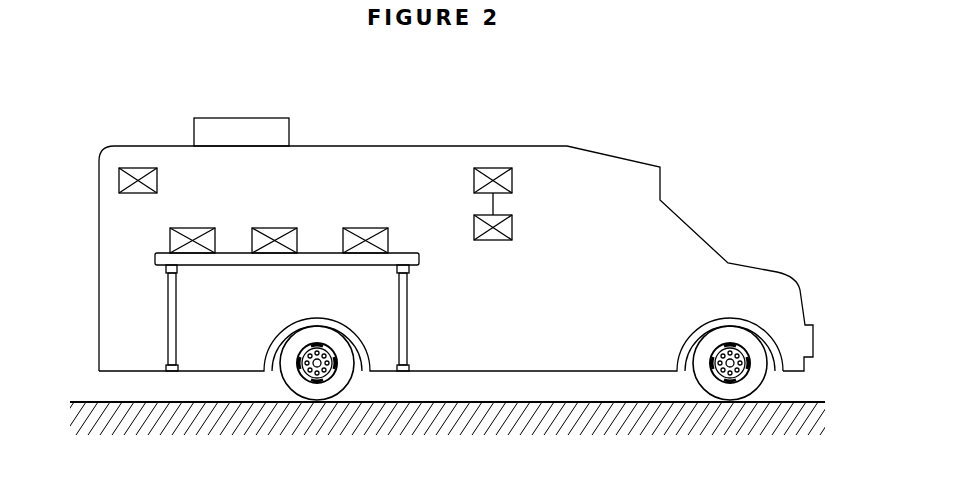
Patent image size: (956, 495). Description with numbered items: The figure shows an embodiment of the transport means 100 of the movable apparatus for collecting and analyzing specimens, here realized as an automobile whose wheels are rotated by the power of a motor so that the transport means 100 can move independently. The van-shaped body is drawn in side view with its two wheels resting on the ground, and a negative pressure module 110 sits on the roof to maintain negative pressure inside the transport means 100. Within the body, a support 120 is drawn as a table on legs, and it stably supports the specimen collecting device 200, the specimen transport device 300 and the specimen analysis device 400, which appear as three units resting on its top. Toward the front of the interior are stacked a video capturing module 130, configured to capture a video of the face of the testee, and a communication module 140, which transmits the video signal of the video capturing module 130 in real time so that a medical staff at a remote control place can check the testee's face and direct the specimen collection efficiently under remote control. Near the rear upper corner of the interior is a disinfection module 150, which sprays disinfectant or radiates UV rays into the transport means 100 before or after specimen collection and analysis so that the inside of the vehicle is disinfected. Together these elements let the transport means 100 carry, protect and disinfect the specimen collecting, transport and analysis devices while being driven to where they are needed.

The transport means 100 is at (708, 215).
The negative pressure module 110 is at (267, 118).
The support 120 is at (225, 253).
The video capturing module 130 is at (503, 168).
The communication module 140 is at (512, 223).
The disinfection module 150 is at (130, 168).
The specimen collecting device 200 is at (163, 242).
The specimen transport device 300 is at (297, 222).
The specimen analysis device 400 is at (385, 222).